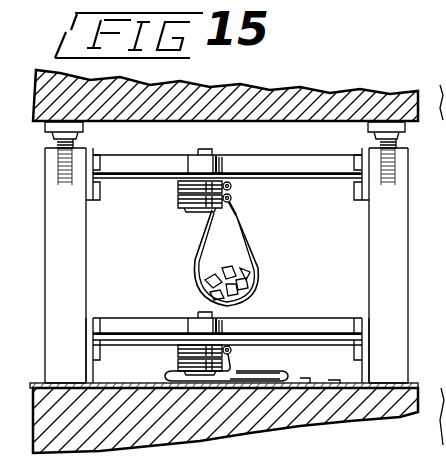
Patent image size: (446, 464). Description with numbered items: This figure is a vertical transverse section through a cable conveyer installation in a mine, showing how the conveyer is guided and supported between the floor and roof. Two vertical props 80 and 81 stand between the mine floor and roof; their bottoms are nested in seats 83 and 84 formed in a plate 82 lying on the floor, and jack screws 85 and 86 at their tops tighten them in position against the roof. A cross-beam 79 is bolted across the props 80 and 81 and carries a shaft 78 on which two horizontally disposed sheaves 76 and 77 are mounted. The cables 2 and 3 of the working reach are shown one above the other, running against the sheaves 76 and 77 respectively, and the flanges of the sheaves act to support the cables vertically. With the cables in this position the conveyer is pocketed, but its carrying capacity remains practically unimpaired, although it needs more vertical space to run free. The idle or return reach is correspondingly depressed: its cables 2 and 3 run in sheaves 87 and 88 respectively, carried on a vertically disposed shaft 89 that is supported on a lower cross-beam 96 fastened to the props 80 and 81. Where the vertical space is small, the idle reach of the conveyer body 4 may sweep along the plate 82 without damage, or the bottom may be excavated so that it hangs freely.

The cable 2 is at (233, 187).
The cable 3 is at (233, 199).
The conveyer body 4 is at (252, 263).
The sheave 76 is at (178, 188).
The sheave 77 is at (180, 204).
The shaft 78 is at (191, 159).
The cross-beam 79 is at (318, 156).
The prop 80 is at (86, 264).
The prop 81 is at (377, 263).
The plate 82 is at (336, 382).
The seat 83 is at (63, 382).
The seat 84 is at (389, 382).
The jack screw 85 is at (77, 143).
The jack screw 86 is at (399, 133).
The sheave 87 is at (180, 348).
The sheave 88 is at (180, 361).
The shaft 89 is at (191, 320).
The cross-beam 96 is at (311, 325).